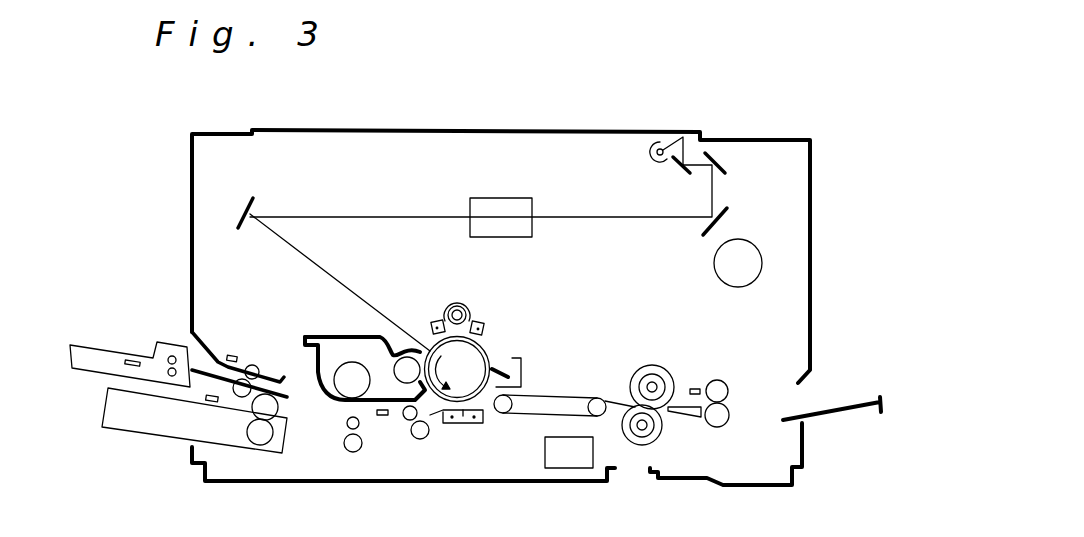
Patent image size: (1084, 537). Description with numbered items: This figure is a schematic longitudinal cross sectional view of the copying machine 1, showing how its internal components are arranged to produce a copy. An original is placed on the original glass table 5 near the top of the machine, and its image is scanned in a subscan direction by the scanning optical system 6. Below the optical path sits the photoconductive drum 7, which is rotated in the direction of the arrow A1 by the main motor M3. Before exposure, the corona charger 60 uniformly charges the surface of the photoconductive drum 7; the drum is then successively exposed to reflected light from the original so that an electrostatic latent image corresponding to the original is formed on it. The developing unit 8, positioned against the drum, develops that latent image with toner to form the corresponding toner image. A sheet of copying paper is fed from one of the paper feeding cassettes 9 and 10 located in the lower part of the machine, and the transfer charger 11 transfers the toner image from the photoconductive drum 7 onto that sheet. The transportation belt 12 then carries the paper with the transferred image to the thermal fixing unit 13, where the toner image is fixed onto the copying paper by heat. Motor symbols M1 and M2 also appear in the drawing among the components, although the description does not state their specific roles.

The copying machine 1 is at (186, 150).
The original glass table 5 is at (430, 135).
The scanning optical system 6 is at (540, 194).
The photoconductive drum 7 is at (488, 349).
The developing unit 8 is at (372, 360).
The paper feeding cassette 9 is at (85, 358).
The paper feeding cassette 10 is at (167, 430).
The transfer charger 11 is at (458, 423).
The transportation belt 12 is at (556, 395).
The thermal fixing unit 13 is at (643, 362).
The corona charger 60 is at (440, 318).
The arrow A1 is at (455, 378).
The main motor M1 is at (569, 452).
The developing motor M2 is at (352, 380).
The main motor M3 is at (738, 263).